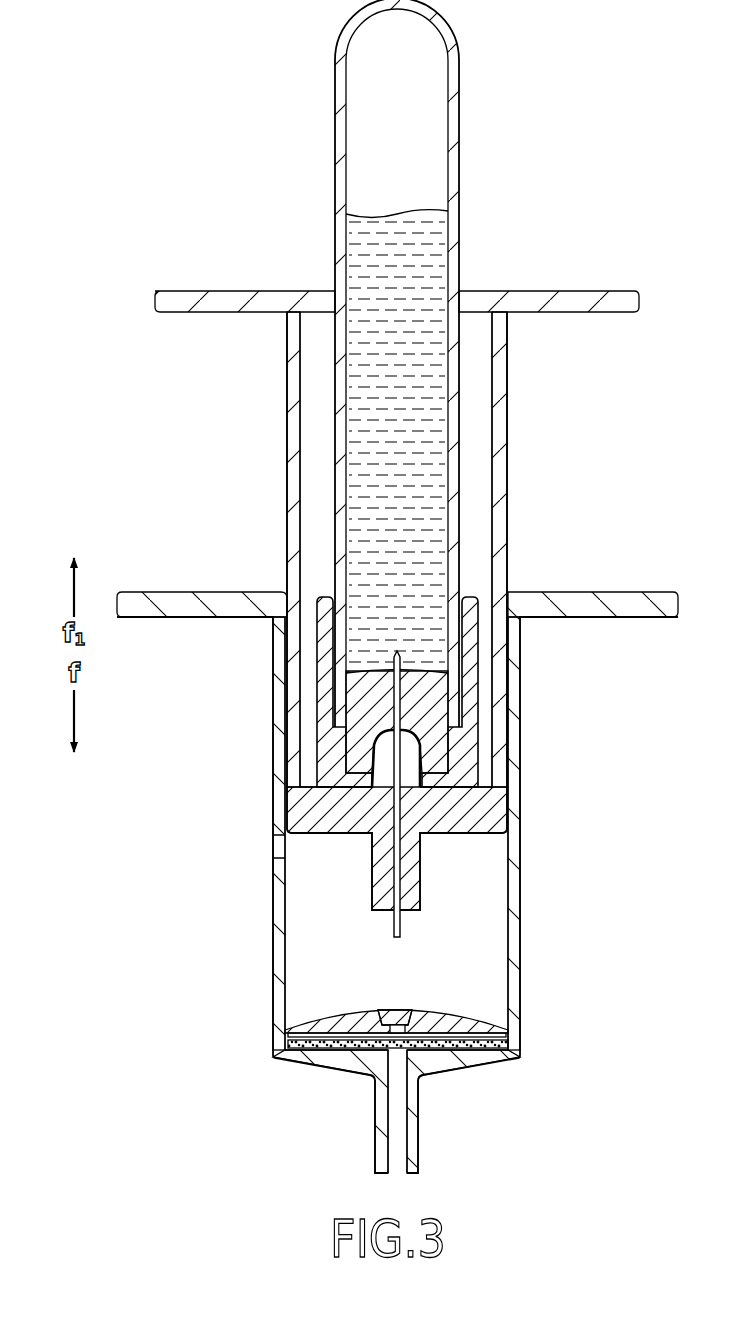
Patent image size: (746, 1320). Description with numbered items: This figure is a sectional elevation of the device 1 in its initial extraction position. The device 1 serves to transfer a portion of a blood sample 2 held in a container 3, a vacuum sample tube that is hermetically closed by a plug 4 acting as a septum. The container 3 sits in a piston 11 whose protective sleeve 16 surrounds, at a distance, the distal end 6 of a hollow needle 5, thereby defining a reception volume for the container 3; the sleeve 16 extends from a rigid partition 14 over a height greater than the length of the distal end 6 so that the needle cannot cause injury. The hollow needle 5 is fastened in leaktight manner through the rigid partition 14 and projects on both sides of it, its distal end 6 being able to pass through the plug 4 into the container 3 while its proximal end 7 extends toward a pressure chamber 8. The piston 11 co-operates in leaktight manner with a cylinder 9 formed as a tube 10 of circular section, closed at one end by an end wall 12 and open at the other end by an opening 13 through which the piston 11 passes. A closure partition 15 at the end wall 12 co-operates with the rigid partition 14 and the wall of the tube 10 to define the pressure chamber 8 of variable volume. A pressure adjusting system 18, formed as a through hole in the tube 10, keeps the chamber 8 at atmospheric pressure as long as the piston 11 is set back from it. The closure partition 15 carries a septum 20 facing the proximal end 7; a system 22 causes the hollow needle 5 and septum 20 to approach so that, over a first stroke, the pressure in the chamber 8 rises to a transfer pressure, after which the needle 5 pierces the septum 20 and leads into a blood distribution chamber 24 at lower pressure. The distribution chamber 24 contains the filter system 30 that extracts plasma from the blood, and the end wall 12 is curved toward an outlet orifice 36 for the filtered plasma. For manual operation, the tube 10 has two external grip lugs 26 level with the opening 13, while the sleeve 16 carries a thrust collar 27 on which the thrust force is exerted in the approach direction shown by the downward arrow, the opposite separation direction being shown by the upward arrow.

The device 1 is at (623, 400).
The blood sample 2 is at (432, 238).
The container 3 is at (461, 158).
The plug 4 is at (451, 713).
The hollow needle 5 is at (382, 611).
The distal end 6 is at (401, 655).
The proximal end 7 is at (395, 935).
The pressure chamber 8 is at (442, 934).
The cylinder 9 is at (521, 930).
The tube 10 is at (399, 855).
The piston 11 is at (408, 549).
The end wall 12 is at (340, 1062).
The opening 13 is at (511, 592).
The rigid partition 14 is at (306, 817).
The closure partition 15 is at (478, 1010).
The protective sleeve 16 is at (298, 423).
The pressure adjusting system 18 is at (281, 847).
The septum 20 is at (394, 1010).
The approach system 22 is at (366, 537).
The blood distribution chamber 24 is at (290, 1038).
The external grip lugs 26 is at (143, 592).
The thrust collar 27 is at (597, 291).
The filter system 30 is at (511, 1044).
The outlet orifice 36 is at (397, 1132).